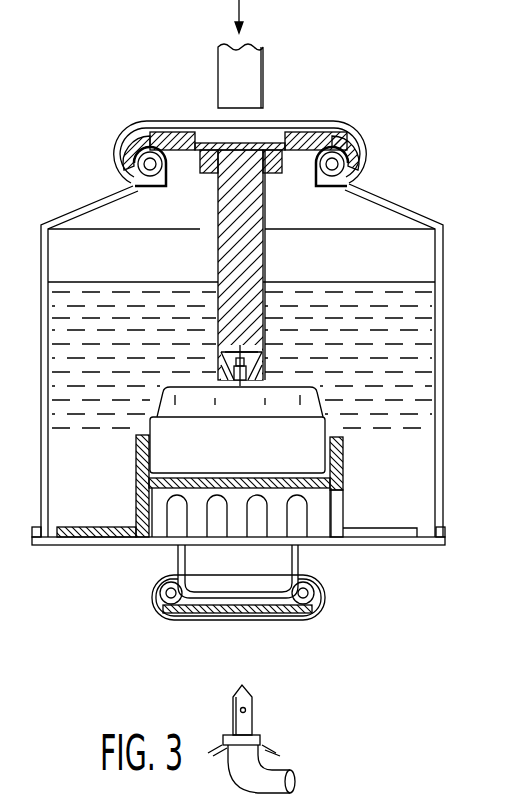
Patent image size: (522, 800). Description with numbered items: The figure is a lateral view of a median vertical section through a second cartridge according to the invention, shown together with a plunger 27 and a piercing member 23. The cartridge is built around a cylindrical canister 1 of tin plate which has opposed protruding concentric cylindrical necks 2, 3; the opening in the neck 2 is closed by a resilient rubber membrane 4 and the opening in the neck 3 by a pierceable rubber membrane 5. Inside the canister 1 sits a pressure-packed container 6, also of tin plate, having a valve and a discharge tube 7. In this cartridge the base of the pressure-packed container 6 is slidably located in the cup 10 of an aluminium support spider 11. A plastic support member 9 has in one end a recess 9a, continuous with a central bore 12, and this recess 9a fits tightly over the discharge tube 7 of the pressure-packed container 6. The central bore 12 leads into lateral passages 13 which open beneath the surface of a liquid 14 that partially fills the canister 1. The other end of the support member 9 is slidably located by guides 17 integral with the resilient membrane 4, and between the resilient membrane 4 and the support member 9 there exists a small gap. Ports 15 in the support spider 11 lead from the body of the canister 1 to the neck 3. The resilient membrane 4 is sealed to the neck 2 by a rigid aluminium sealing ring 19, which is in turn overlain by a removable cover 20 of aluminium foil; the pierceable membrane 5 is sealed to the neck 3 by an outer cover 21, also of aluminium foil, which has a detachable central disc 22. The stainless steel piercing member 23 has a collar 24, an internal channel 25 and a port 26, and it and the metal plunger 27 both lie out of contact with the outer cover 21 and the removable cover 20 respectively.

The cylindrical canister 1 is at (447, 259).
The neck 2 is at (92, 203).
The neck 3 is at (178, 562).
The resilient rubber membrane 4 is at (160, 140).
The pierceable rubber membrane 5 is at (230, 604).
The pressure-packed container 6 is at (316, 392).
The discharge tube 7 is at (240, 390).
The support member 9 is at (262, 201).
The recess 9a is at (218, 372).
The cup 10 is at (343, 458).
The support spider 11 is at (137, 507).
The central bore 12 is at (263, 368).
The lateral passages 13 is at (220, 345).
The liquid 14 is at (400, 307).
The ports 15 is at (320, 505).
The guides 17 is at (200, 170).
The sealing ring 19 is at (355, 145).
The removable cover 20 is at (346, 118).
The outer cover 21 is at (313, 610).
The detachable central disc 22 is at (222, 613).
The piercing member 23 is at (255, 720).
The collar 24 is at (262, 740).
The internal channel 25 is at (285, 780).
The port 26 is at (235, 708).
The plunger 27 is at (219, 85).